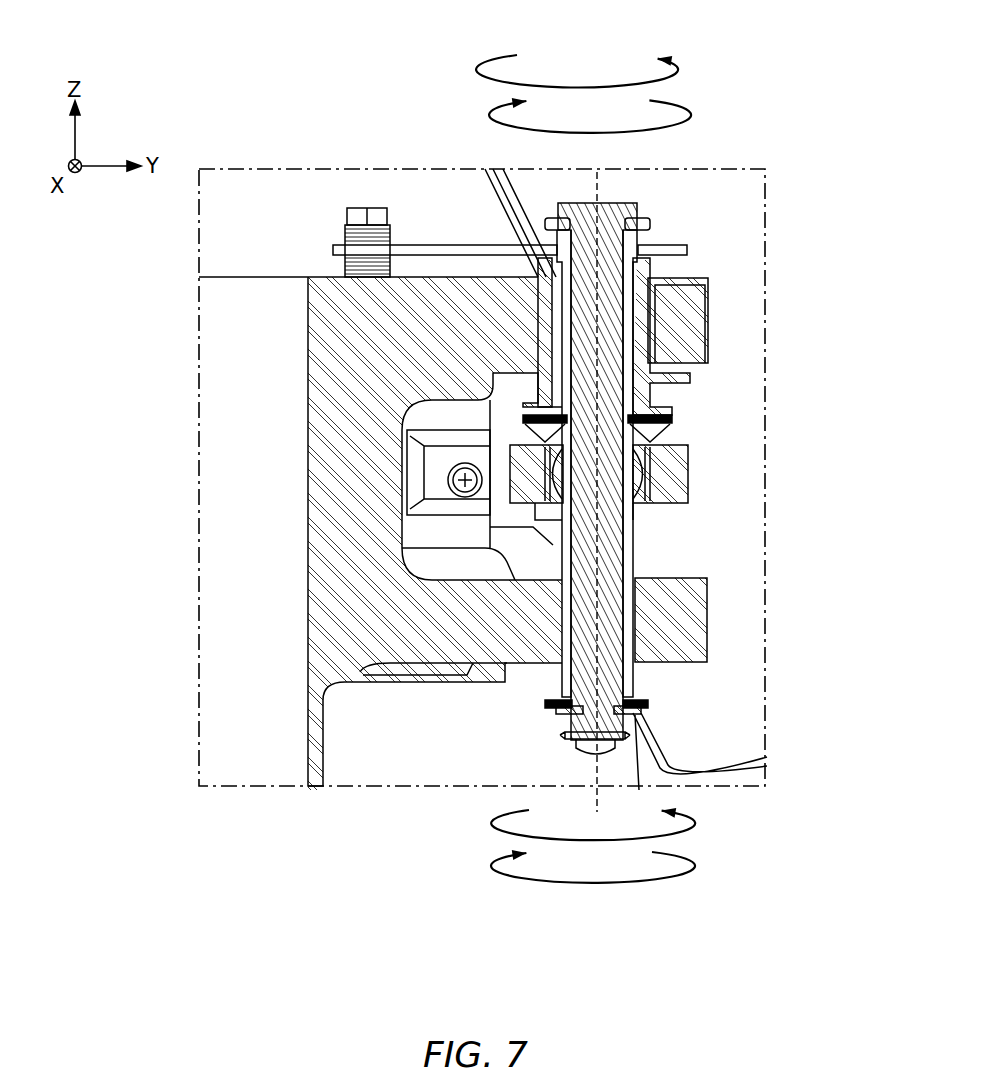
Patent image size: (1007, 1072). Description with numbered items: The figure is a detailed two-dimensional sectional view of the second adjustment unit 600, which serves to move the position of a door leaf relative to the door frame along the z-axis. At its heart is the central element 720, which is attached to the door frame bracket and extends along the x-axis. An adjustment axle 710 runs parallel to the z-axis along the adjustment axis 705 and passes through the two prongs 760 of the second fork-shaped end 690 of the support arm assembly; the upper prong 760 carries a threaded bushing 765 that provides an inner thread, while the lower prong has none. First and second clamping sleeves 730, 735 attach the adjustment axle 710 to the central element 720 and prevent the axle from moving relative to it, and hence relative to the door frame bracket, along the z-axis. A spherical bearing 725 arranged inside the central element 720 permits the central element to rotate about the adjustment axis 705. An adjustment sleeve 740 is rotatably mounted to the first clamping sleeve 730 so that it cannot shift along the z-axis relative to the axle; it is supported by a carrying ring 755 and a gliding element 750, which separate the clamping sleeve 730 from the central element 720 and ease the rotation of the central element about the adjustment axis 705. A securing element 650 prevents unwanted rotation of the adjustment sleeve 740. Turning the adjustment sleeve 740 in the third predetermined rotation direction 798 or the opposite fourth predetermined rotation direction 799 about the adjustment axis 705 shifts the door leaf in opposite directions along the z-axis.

The second adjustment unit 600 is at (698, 180).
The securing element 650 is at (687, 250).
The second fork-shaped end 690 is at (290, 371).
The adjustment axis 705 is at (598, 543).
The adjustment axle 710 is at (580, 588).
The central element 720 is at (677, 467).
The spherical bearing 725 is at (628, 460).
The first clamping sleeve 730 is at (626, 397).
The second clamping sleeve 735 is at (628, 684).
The adjustment sleeve 740 is at (648, 380).
The gliding element 750 is at (565, 420).
The carrying ring 755 is at (550, 428).
The prongs 760 is at (687, 323).
The threaded bushing 765 is at (542, 306).
The third predetermined rotation direction 798 is at (680, 62).
The fourth predetermined rotation direction 799 is at (692, 115).